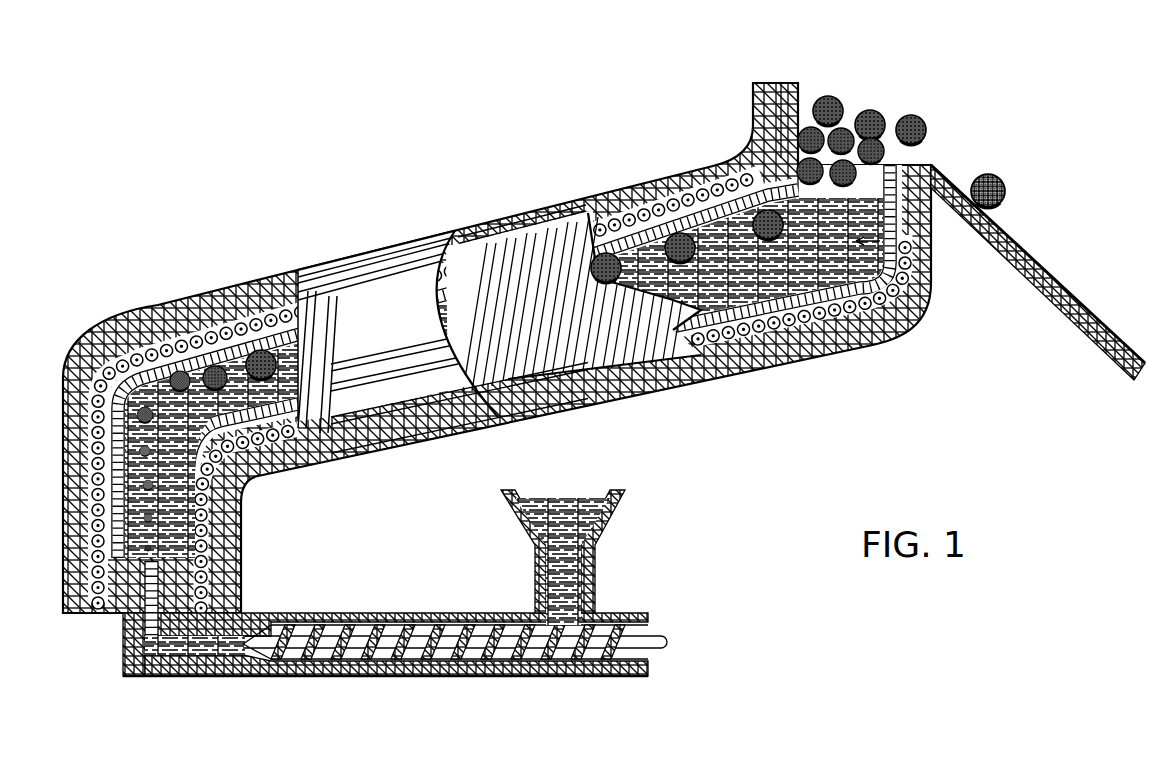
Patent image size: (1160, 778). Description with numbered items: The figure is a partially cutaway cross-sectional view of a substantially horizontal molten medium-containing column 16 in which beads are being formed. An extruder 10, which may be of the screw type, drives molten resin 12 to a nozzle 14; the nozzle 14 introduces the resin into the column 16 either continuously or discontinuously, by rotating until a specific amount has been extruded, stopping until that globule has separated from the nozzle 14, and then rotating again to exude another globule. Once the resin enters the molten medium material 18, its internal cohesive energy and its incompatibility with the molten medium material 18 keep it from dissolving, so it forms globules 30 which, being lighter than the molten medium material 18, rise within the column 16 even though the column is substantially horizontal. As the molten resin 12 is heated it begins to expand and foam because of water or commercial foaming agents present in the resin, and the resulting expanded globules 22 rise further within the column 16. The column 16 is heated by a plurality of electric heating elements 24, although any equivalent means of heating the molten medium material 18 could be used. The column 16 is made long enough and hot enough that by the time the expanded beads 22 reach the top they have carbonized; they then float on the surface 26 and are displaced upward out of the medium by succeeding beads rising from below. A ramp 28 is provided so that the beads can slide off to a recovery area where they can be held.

The extruder 10 is at (374, 668).
The molten resin 12 is at (570, 490).
The nozzle 14 is at (107, 605).
The molten medium-containing column 16 is at (377, 238).
The molten medium material 18 is at (923, 273).
The expanded globules 22 is at (214, 312).
The electric heating elements 24 is at (653, 193).
The surface 26 is at (912, 138).
The ramp 28 is at (1026, 248).
The globules 30 is at (183, 506).